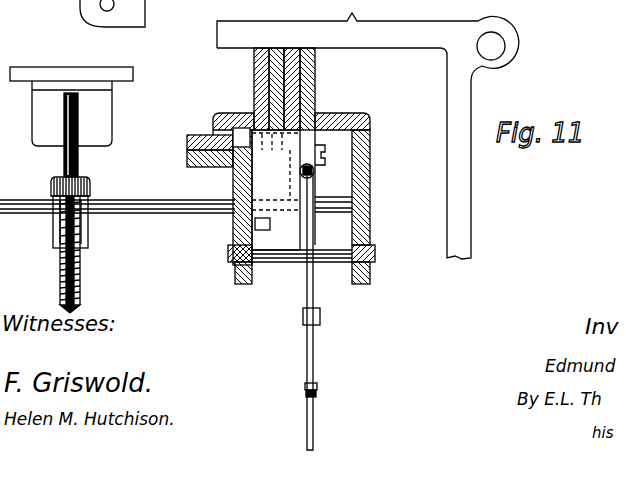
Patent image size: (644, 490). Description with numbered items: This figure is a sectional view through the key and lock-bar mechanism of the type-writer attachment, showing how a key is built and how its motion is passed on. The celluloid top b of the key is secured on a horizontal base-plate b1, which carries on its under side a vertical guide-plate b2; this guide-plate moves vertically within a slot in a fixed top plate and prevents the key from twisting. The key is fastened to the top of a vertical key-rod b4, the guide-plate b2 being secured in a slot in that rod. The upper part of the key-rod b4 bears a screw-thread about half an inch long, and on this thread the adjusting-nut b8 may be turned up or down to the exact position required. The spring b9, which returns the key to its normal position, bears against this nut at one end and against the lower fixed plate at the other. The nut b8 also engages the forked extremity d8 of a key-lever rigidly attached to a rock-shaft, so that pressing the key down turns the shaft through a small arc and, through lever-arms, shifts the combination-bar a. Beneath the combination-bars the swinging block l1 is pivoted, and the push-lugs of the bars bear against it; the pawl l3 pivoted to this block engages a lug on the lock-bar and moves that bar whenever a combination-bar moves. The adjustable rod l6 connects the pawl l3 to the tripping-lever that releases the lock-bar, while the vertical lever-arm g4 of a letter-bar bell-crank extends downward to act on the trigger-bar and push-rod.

The combination-bar a is at (420, 28).
The vertical lever-arm g4 is at (452, 181).
The celluloid top b is at (133, 73).
The horizontal base-plate b1 is at (113, 88).
The vertical guide-plate b2 is at (113, 125).
The adjusting-nut b8 is at (90, 183).
The forked extremity of key-lever d8 is at (88, 233).
The vertical key-rod b4 is at (80, 262).
The spring b9 is at (78, 287).
The pawl l3 is at (318, 172).
The swinging block l1 is at (287, 266).
The adjustable rod l6 is at (315, 312).